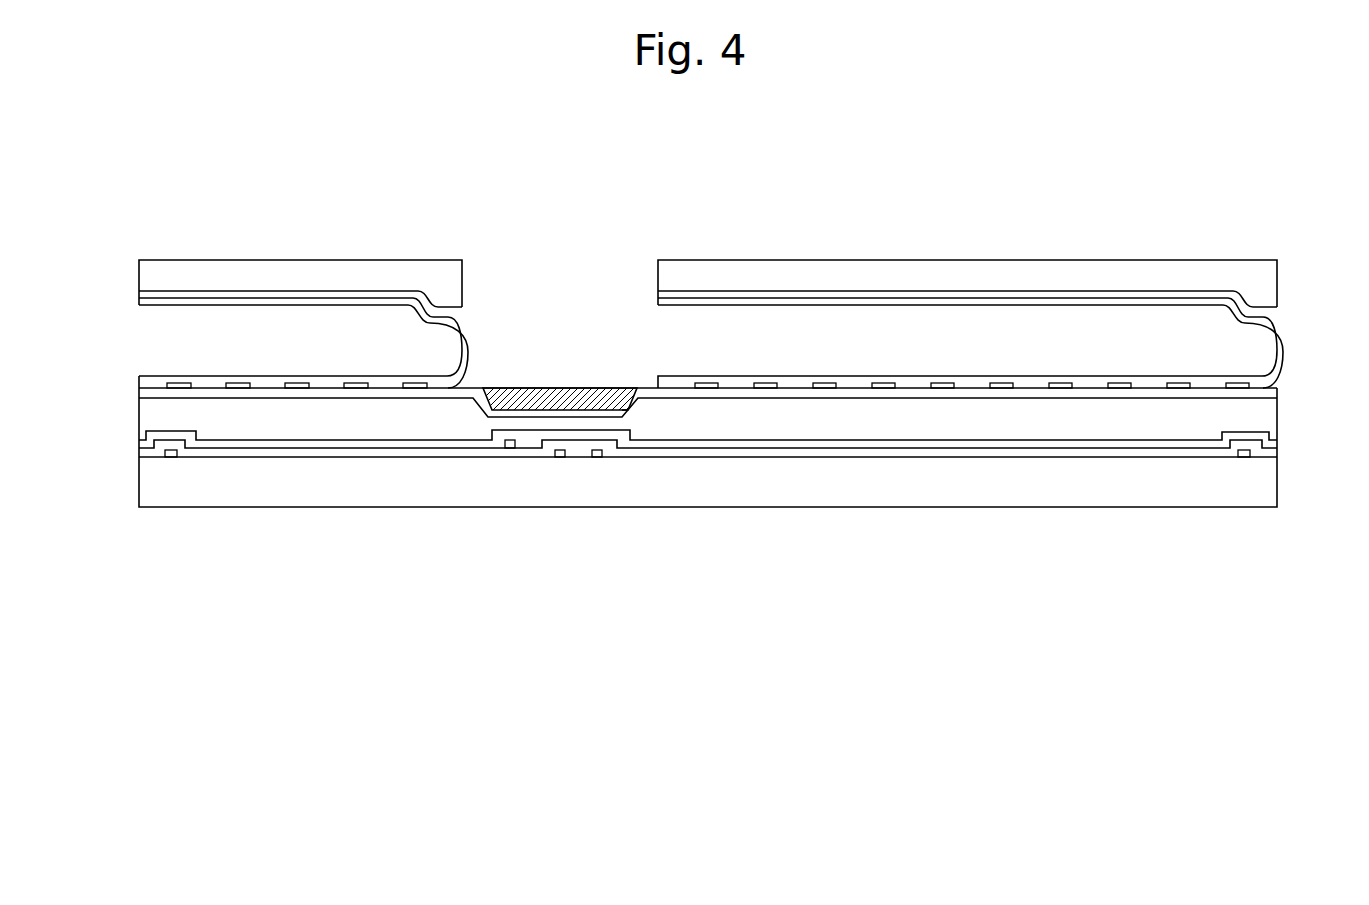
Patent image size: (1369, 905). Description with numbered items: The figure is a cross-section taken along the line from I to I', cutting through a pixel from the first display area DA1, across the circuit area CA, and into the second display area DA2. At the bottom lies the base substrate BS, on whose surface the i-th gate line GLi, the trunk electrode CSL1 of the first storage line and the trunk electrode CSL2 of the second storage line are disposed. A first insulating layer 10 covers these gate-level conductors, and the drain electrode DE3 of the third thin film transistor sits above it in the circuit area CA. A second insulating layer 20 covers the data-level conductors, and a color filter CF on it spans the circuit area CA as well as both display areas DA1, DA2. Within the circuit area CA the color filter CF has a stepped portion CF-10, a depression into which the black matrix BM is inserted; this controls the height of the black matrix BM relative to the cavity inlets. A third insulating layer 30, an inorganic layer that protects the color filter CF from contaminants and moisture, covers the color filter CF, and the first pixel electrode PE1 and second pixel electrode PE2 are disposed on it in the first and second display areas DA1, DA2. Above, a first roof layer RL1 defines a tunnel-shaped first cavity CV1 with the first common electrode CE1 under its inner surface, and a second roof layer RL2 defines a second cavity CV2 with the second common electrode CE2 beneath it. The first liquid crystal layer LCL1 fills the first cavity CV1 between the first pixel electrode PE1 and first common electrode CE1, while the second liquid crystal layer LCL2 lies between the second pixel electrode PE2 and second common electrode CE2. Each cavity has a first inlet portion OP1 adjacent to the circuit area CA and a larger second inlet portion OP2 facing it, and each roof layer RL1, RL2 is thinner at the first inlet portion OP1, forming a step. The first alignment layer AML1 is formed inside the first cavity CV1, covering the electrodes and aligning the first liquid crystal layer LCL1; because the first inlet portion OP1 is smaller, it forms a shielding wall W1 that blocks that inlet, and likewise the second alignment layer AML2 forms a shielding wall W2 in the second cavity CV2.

The first roof layer RL1 is at (148, 273).
The first common electrode CE1 is at (150, 294).
The second roof layer RL2 is at (1278, 273).
The second common electrode CE2 is at (1280, 296).
The shielding wall W1 is at (458, 347).
The shielding wall W2 is at (1272, 347).
The first alignment layer AML1 is at (265, 302).
The second alignment layer AML2 is at (823, 302).
The first cavity CV1 is at (184, 325).
The second cavity CV2 is at (732, 325).
The first display area DA1 is at (453, 240).
The second display area DA2 is at (1268, 240).
The circuit area CA is at (649, 240).
The first inlet portion OP1 is at (462, 313).
The second inlet portion OP2 is at (139, 376).
The first liquid crystal layer LCL1 is at (323, 314).
The second liquid crystal layer LCL2 is at (965, 314).
The black matrix BM is at (557, 385).
The third insulating layer 30 is at (1278, 393).
The color filter CF is at (1278, 412).
The second insulating layer 20 is at (1278, 442).
The first insulating layer 10 is at (1278, 452).
The base substrate BS is at (1278, 488).
The first pixel electrode PE1 is at (296, 388).
The second pixel electrode PE2 is at (884, 388).
The trunk electrode CSL1 is at (171, 457).
The trunk electrode CSL2 is at (1244, 457).
The drain electrode DE3 is at (510, 448).
The i-th gate line GLi is at (560, 457).
The stepped portion CF-10 is at (622, 413).
The section line end I is at (137, 523).
The section line end I' is at (1275, 523).